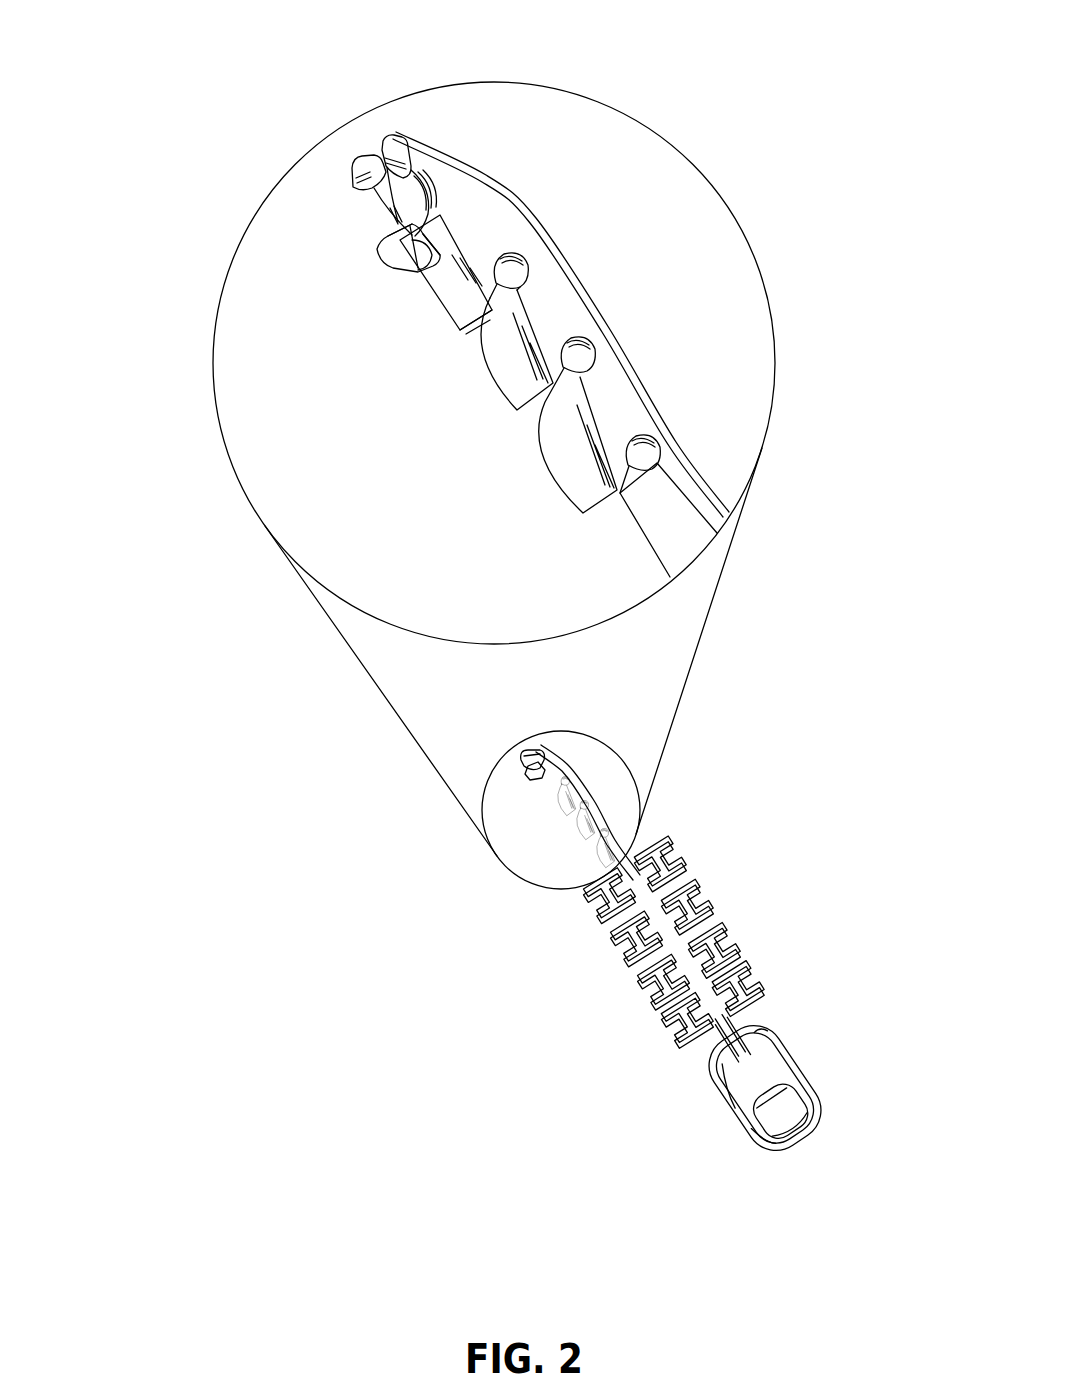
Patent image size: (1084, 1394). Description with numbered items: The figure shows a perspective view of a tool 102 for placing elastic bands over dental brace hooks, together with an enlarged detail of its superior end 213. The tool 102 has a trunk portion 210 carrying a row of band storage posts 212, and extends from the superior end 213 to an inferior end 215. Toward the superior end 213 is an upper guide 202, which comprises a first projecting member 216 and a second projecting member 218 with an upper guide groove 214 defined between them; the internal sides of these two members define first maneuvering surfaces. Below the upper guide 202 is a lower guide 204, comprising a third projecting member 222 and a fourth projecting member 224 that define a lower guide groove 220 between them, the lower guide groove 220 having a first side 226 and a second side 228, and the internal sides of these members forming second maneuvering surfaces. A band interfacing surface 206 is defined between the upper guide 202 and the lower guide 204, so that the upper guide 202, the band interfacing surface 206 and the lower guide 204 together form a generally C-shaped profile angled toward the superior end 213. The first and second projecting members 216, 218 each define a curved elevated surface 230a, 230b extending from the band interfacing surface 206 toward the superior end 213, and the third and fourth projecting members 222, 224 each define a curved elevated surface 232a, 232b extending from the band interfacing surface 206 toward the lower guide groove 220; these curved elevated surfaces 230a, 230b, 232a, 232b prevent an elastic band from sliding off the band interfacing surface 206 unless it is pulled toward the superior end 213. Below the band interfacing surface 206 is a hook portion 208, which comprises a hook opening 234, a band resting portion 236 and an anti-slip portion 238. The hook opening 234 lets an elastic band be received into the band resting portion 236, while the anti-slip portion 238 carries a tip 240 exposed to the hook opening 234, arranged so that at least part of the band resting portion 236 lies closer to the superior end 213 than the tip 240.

The tool 102 is at (681, 1001).
The upper guide 202 is at (377, 434).
The lower guide 204 is at (403, 541).
The band interfacing surface 206 is at (352, 216).
The hook portion 208 is at (468, 562).
The trunk portion 210 is at (640, 963).
The band storage posts 212 is at (626, 1022).
The superior end 213 is at (561, 506).
The upper guide groove 214 is at (413, 116).
The inferior end 215 is at (785, 1120).
The first projecting member 216 is at (309, 140).
The second projecting member 218 is at (345, 115).
The lower guide groove 220 is at (494, 207).
The third projecting member 222 is at (344, 316).
The fourth projecting member 224 is at (390, 292).
The first side 226 is at (525, 231).
The second side 228 is at (489, 168).
The curved elevated surface 230a is at (280, 225).
The curved elevated surface 230b is at (259, 217).
The curved elevated surface 232a is at (482, 118).
The curved elevated surface 232b is at (469, 166).
The hook opening 234 is at (462, 370).
The band resting portion 236 is at (584, 278).
The anti-slip portion 238 is at (600, 315).
The tip 240 is at (597, 351).